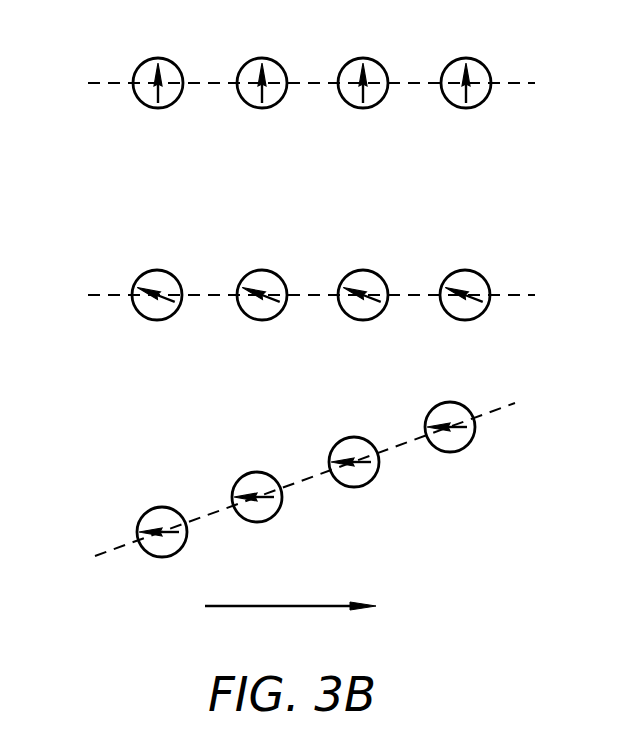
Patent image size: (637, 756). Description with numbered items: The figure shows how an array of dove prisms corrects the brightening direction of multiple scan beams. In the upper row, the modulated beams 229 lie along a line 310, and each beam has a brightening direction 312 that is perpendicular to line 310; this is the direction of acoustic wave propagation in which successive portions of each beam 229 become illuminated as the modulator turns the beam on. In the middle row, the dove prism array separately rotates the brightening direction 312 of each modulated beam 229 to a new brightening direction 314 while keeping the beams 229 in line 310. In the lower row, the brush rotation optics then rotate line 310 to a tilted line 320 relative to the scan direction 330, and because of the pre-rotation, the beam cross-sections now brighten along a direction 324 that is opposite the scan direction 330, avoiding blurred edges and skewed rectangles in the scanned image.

The line 310 is at (291, 164).
The modulated beams 229 is at (187, 66).
The brightening direction 312 is at (119, 104).
The brightening direction 314 is at (185, 267).
The line 320 is at (283, 479).
The direction 324 is at (177, 495).
The scan direction 330 is at (290, 583).